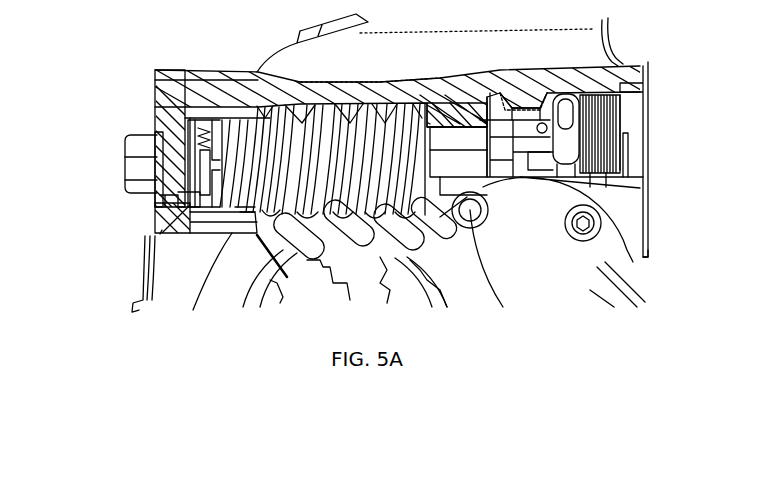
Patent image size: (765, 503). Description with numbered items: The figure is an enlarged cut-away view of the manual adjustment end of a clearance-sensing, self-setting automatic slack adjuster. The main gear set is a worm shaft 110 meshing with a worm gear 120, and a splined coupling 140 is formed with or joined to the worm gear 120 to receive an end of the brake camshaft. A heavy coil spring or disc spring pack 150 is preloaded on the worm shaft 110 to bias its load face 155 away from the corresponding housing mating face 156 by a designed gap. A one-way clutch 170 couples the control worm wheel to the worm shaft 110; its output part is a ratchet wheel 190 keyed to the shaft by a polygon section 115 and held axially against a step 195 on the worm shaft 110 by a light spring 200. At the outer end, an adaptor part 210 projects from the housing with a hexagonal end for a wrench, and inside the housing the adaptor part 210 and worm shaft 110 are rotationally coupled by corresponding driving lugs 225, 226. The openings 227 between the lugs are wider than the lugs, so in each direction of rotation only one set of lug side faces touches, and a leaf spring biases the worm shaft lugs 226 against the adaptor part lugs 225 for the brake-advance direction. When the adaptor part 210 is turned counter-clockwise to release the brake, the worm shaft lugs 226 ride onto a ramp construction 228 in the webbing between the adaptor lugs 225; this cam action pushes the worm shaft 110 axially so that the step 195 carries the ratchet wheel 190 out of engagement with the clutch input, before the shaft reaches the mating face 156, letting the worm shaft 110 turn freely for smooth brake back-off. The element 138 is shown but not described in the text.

The worm shaft 110 is at (257, 70).
The polygon section 115 is at (512, 97).
The worm gear 120 is at (398, 272).
The housing flange 138 is at (627, 267).
The splined coupling 140 is at (340, 270).
The disc spring pack 150 is at (620, 120).
The worm shaft load face 155 is at (427, 105).
The housing mating face 156 is at (440, 80).
The one-way clutch 170 is at (565, 93).
The ratchet wheel 190 is at (610, 57).
The step 195 is at (483, 150).
The light spring 200 is at (540, 170).
The adaptor part 210 is at (137, 153).
The adaptor part lugs 225 is at (155, 107).
The worm shaft lugs 226 is at (197, 233).
The openings 227 is at (160, 200).
The ramp construction 228 is at (210, 113).